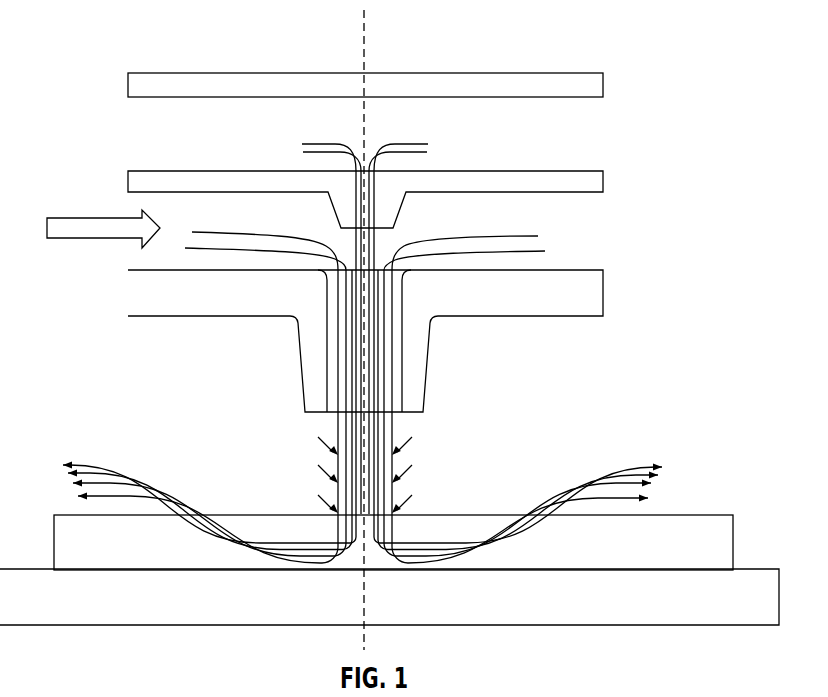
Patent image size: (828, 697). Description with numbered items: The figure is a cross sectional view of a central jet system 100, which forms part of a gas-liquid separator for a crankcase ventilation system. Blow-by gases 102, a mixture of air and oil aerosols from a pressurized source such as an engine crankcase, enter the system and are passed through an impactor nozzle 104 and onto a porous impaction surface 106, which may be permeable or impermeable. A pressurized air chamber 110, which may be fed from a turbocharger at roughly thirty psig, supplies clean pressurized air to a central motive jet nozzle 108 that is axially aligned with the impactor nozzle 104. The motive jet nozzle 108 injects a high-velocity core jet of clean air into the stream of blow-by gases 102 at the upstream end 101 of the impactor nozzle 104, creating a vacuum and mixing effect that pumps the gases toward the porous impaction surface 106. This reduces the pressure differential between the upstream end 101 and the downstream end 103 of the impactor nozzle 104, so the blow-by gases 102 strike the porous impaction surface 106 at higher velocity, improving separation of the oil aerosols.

The central jet system 100 is at (132, 34).
The pressurized air chamber 110 is at (208, 144).
The blow-by gases 102 is at (98, 228).
The motive jet nozzle 108 is at (394, 200).
The upstream end of the impactor nozzle 101 is at (414, 290).
The impactor nozzle 104 is at (423, 372).
The downstream end of the impactor nozzle 103 is at (308, 424).
The porous impaction surface 106 is at (690, 523).